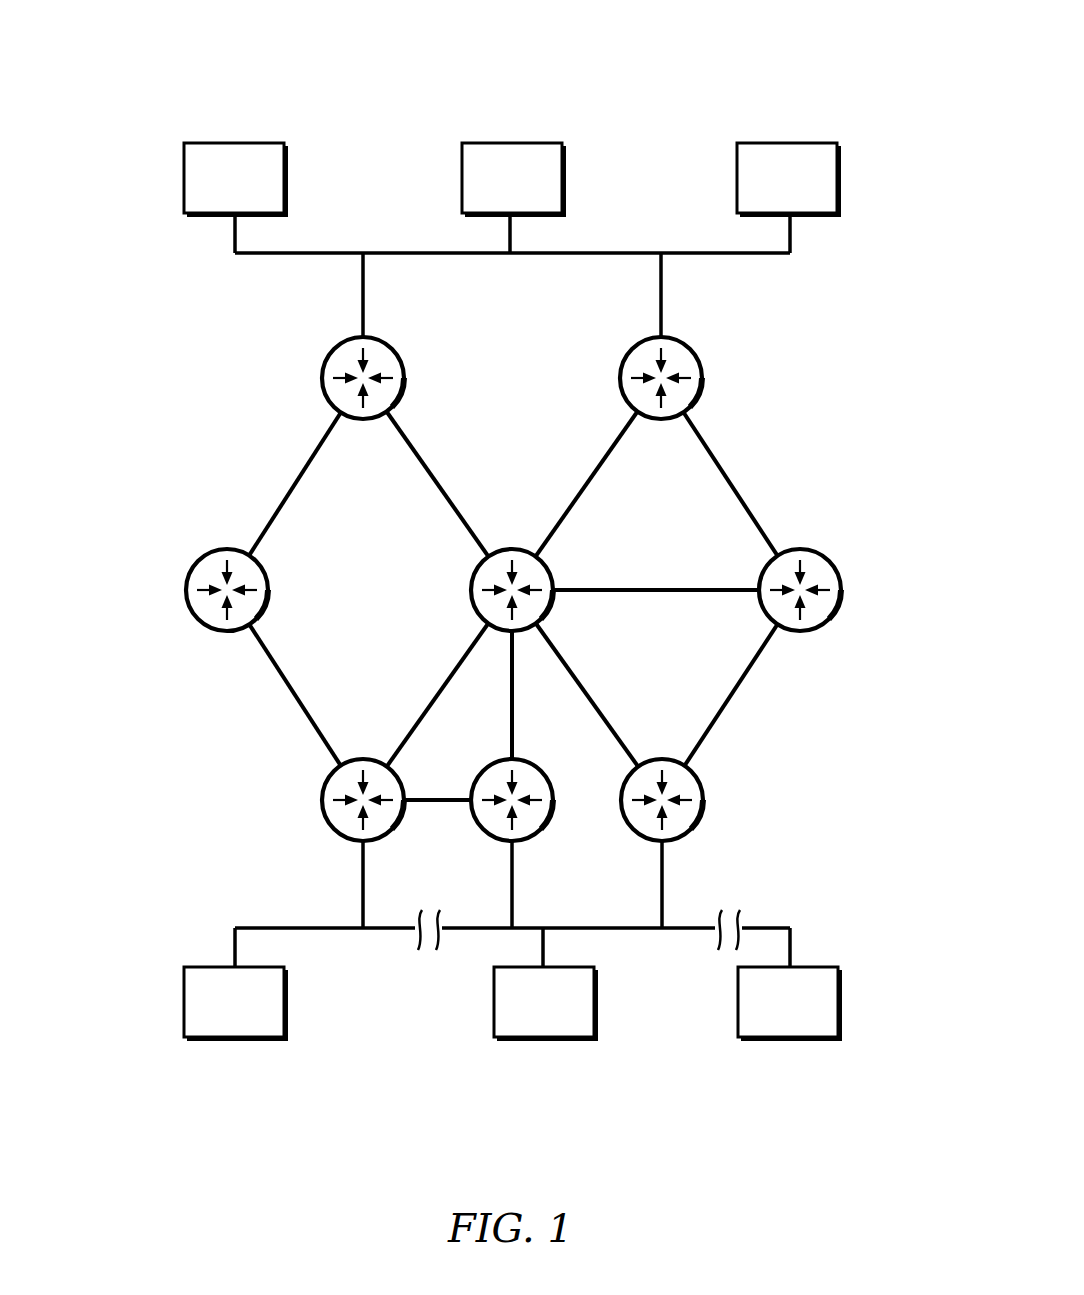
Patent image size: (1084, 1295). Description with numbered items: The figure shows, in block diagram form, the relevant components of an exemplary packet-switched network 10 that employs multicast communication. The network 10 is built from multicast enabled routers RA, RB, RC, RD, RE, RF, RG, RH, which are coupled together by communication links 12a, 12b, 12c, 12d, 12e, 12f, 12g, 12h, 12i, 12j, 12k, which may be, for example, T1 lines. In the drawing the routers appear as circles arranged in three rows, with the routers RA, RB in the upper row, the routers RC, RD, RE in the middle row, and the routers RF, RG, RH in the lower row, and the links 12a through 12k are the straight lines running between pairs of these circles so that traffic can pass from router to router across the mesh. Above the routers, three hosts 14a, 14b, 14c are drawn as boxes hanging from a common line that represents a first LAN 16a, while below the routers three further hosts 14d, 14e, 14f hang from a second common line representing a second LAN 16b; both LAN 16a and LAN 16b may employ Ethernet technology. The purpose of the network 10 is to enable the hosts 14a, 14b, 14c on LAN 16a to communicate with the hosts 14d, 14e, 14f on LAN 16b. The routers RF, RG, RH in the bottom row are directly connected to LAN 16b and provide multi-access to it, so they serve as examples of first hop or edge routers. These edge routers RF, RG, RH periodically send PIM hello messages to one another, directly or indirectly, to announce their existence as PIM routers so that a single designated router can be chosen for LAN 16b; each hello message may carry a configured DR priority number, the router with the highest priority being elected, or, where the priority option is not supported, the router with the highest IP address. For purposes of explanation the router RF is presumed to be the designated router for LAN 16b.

The network 10 is at (150, 42).
The communication link 12a is at (290, 475).
The communication link 12b is at (443, 462).
The communication link 12c is at (596, 447).
The communication link 12d is at (730, 462).
The communication link 12e is at (270, 672).
The communication link 12f is at (440, 697).
The communication link 12g is at (510, 724).
The communication link 12h is at (568, 672).
The communication link 12i is at (663, 588).
The communication link 12j is at (752, 677).
The communication link 12k is at (445, 805).
The host 14a is at (240, 143).
The host 14b is at (515, 143).
The host 14c is at (773, 143).
The host 14d is at (240, 1040).
The host 14e is at (548, 1040).
The host 14f is at (798, 1040).
The LAN 16a is at (580, 257).
The LAN 16b is at (788, 926).
The router RA is at (406, 378).
The router RB is at (704, 378).
The router RC is at (268, 588).
The router RD is at (553, 588).
The router RE is at (841, 588).
The edge router RF is at (322, 800).
The edge router RG is at (530, 835).
The edge router RH is at (704, 800).